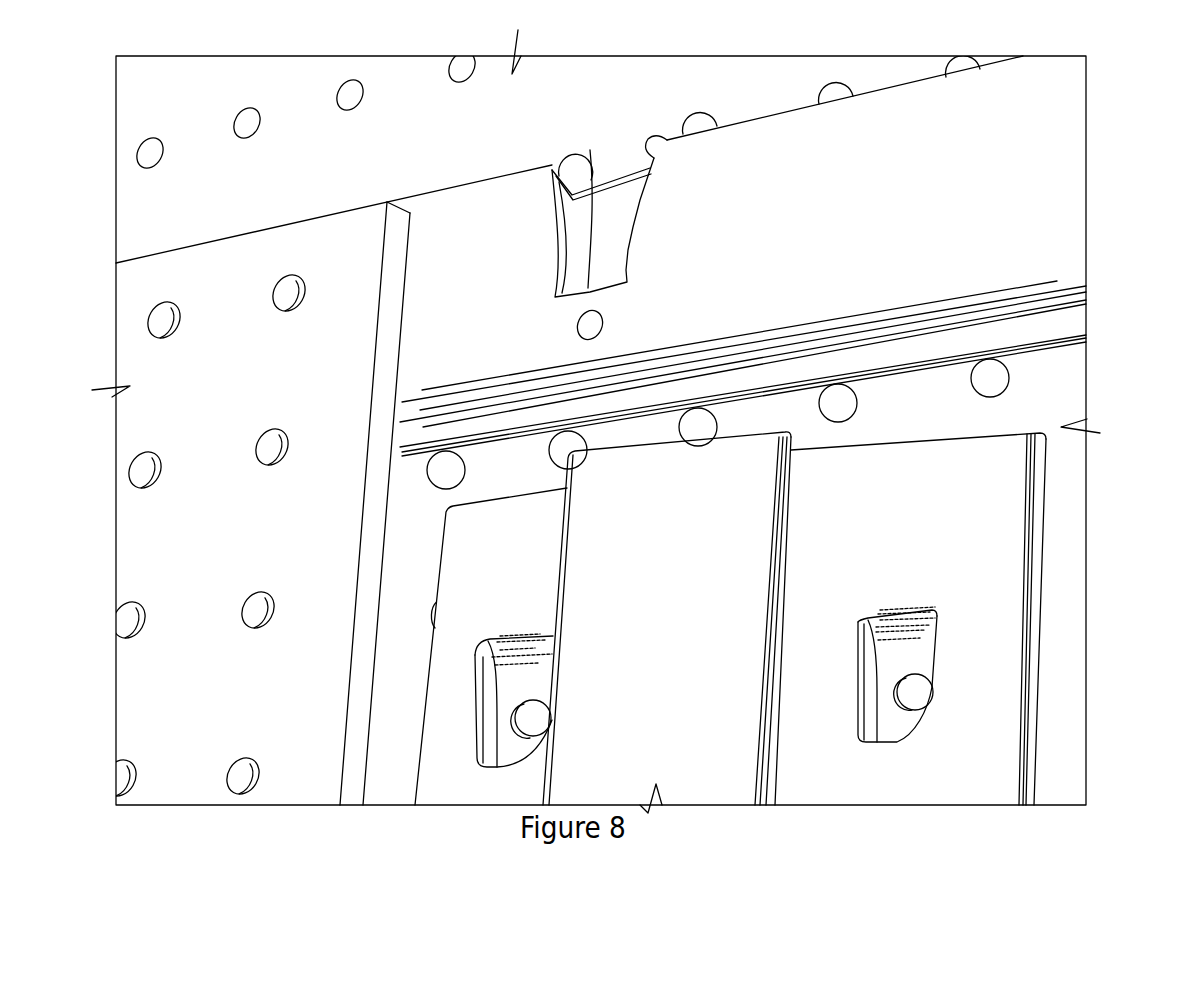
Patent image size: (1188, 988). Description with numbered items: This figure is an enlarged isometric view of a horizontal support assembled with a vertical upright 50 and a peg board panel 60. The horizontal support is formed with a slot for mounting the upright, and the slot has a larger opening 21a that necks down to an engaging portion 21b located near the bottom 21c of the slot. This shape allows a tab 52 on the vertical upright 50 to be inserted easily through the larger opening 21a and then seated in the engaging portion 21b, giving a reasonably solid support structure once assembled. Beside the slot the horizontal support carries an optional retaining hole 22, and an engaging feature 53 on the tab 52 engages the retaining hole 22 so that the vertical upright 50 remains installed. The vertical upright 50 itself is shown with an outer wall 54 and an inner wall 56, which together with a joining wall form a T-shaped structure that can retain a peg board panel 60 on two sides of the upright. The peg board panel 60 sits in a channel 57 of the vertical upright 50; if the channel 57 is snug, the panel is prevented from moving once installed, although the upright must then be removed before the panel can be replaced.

The peg board panel 60 is at (228, 265).
The larger opening 21a is at (648, 134).
The engaging portion 21b is at (560, 273).
The bottom of the slot 21c is at (590, 150).
The retaining hole 22 is at (603, 320).
The channel 57 is at (818, 447).
The outer wall 54 is at (785, 560).
The vertical upright 50 is at (1047, 565).
The tab 52 is at (905, 652).
The engaging feature 53 is at (920, 697).
The inner wall 56 is at (1033, 767).